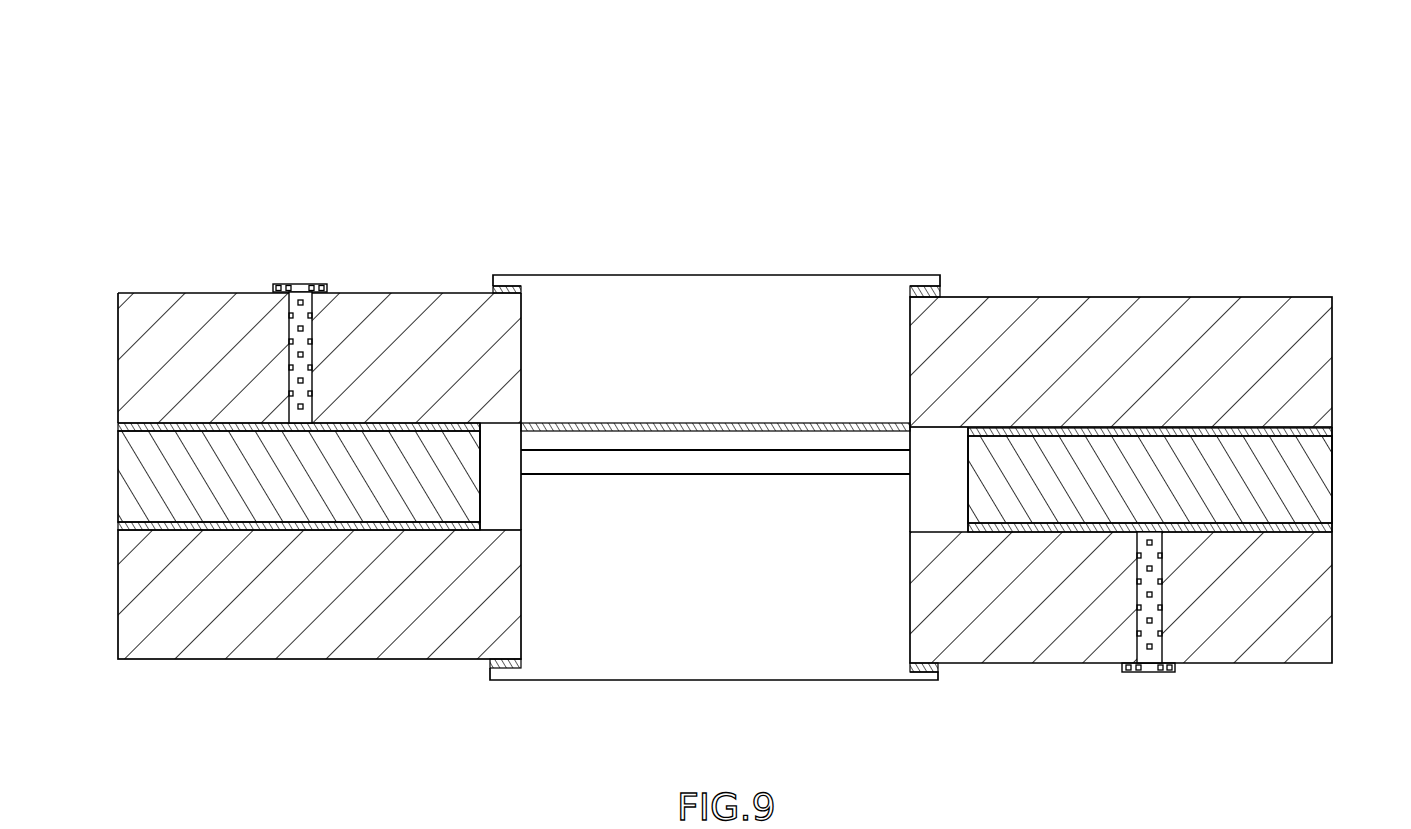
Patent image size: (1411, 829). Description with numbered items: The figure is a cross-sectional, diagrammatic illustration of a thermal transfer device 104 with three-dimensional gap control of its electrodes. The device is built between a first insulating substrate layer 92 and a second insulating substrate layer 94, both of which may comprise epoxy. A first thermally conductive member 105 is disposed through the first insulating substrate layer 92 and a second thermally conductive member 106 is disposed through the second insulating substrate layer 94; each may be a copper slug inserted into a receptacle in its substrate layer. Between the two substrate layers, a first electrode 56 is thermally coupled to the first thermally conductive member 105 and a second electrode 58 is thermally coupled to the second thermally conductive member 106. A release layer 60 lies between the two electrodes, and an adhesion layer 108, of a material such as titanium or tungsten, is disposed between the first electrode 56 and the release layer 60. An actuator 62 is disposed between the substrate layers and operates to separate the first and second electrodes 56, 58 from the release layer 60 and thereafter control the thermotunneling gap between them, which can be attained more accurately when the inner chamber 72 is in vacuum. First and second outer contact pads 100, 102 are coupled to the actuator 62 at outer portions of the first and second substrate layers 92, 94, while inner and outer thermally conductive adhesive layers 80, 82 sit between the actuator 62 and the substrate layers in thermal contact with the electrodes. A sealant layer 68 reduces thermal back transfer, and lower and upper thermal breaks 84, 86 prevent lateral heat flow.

The thermal transfer device 104 is at (1258, 110).
The second outer contact pad 102 is at (308, 292).
The second insulating substrate layer 94 is at (401, 296).
The second thermally conductive member 106 is at (712, 287).
The upper thermal break 86 is at (942, 294).
The second electrode 58 is at (565, 440).
The inner thermally conductive adhesive layer 80 is at (650, 425).
The outer thermally conductive adhesive layer 82 is at (118, 527).
The actuator 62 is at (118, 470).
The first electrode 56 is at (580, 477).
The adhesion layer 108 is at (755, 446).
The release layer 60 is at (803, 453).
The sealant layer 68 is at (968, 526).
The inner chamber 72 is at (928, 462).
The first insulating substrate layer 92 is at (210, 650).
The lower thermal break 84 is at (490, 665).
The first thermally conductive member 105 is at (702, 673).
The first outer contact pad 100 is at (1150, 673).